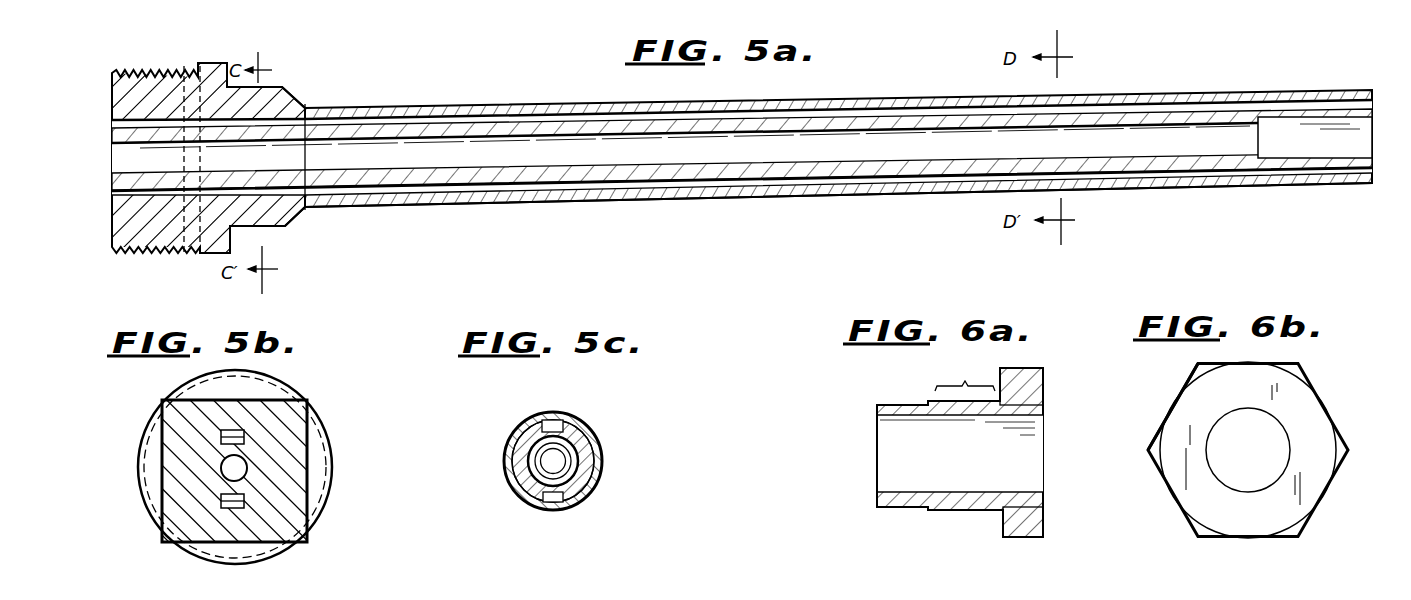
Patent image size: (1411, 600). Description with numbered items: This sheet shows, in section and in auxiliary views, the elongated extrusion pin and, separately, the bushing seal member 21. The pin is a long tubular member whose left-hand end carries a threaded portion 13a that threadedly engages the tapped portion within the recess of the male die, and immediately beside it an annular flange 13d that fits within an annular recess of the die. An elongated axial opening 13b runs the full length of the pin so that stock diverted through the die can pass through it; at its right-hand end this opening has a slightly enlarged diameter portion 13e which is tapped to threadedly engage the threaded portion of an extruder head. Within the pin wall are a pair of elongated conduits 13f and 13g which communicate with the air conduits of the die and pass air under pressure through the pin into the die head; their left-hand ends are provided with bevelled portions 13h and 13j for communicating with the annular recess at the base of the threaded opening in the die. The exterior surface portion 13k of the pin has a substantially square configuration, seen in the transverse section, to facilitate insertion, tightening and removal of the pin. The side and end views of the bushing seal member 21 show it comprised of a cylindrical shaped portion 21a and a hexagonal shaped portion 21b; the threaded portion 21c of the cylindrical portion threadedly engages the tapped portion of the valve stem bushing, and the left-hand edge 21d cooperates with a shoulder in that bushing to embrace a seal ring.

In FIG. 5A, the threaded portion 13a is at (173, 70).
In FIG. 5A, the elongated axial opening 13b is at (566, 173).
In FIG. 5B, the elongated axial opening 13b is at (242, 470).
In FIG. 5C, the elongated axial opening 13b is at (566, 462).
In FIG. 5A, the annular flange 13d is at (213, 254).
In FIG. 5B, the annular flange 13d is at (323, 452).
In FIG. 5A, the enlarged diameter portion 13e is at (199, 68).
In FIG. 5C, the enlarged diameter portion 13e is at (530, 466).
In FIG. 5A, the elongated conduit 13f is at (562, 114).
In FIG. 5C, the elongated conduit 13f is at (560, 421).
In FIG. 5A, the elongated conduit 13g is at (462, 200).
In FIG. 5C, the elongated conduit 13g is at (553, 503).
In FIG. 5A, the bevelled portion 13h is at (117, 123).
In FIG. 5B, the bevelled portion 13h is at (233, 431).
In FIG. 5A, the bevelled portion 13j is at (117, 191).
In FIG. 5B, the bevelled portion 13j is at (238, 509).
In FIG. 5A, the exterior surface portion 13k is at (276, 227).
In FIG. 5B, the exterior surface portion 13k is at (160, 474).
In FIG. 6A, the bushing seal member 21 is at (873, 452).
In FIG. 6B, the bushing seal member 21 is at (1333, 406).
In FIG. 6A, the cylindrical shaped portion 21a is at (919, 417).
In FIG. 6A, the hexagonal shaped portion 21b is at (1022, 368).
In FIG. 6B, the hexagonal shaped portion 21b is at (1168, 411).
In FIG. 6A, the threaded portion 21c is at (965, 379).
In FIG. 6A, the left-hand edge 21d is at (877, 407).